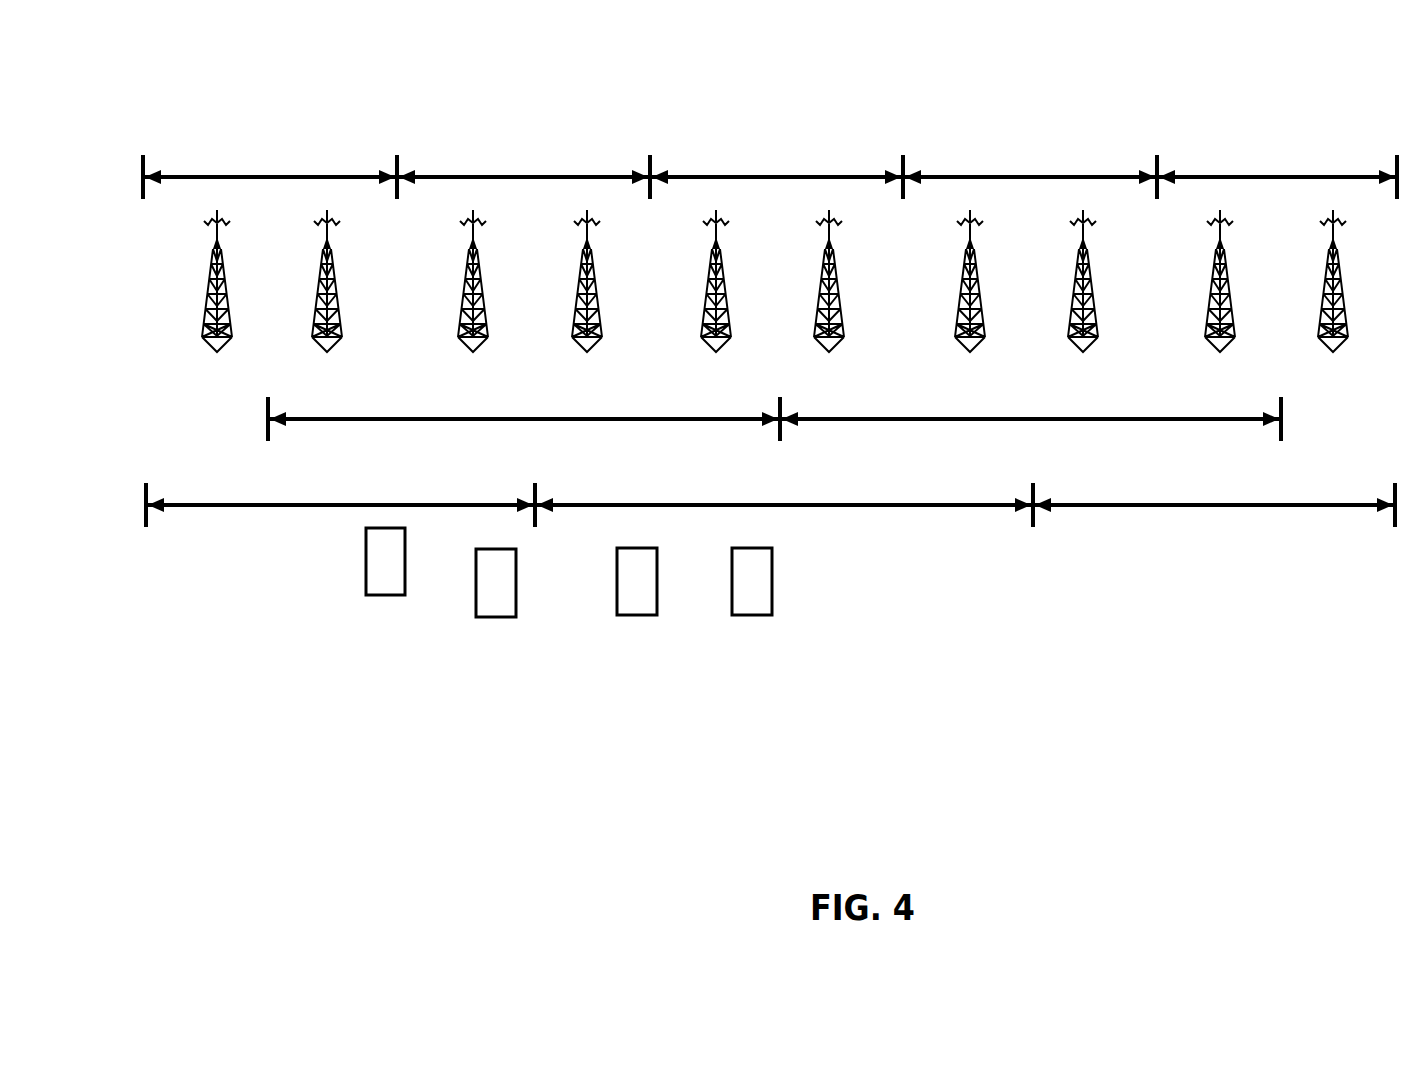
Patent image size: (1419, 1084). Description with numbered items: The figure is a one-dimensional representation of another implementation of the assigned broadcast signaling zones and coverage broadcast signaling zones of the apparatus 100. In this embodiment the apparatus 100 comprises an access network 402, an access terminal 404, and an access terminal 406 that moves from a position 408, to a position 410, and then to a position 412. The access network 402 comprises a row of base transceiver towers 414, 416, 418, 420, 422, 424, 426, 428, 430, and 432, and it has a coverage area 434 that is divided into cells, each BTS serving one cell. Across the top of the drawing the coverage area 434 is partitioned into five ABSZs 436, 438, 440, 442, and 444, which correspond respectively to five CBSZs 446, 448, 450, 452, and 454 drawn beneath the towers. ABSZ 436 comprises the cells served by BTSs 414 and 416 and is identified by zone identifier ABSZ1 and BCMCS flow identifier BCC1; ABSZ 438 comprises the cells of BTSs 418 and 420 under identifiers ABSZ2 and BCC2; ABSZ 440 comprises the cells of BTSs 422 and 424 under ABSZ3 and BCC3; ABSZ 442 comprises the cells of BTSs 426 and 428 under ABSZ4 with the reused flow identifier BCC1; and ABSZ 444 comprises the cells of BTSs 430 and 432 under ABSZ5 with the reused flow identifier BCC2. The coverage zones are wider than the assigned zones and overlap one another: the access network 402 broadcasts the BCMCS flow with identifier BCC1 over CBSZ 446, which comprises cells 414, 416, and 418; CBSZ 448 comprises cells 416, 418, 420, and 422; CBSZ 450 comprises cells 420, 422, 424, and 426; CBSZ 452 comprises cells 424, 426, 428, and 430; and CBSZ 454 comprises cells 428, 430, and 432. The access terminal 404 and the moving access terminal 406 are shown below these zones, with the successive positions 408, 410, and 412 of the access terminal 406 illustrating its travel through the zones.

The apparatus 100 is at (226, 828).
The access network 402 is at (190, 303).
The access terminal 404 is at (366, 565).
The access terminal 406 is at (653, 651).
The position 408 is at (497, 647).
The position 410 is at (643, 648).
The position 412 is at (750, 647).
The base transceiver tower 414 is at (217, 292).
The base transceiver tower 416 is at (327, 292).
The base transceiver tower 418 is at (473, 292).
The base transceiver tower 420 is at (587, 292).
The base transceiver tower 422 is at (716, 292).
The base transceiver tower 424 is at (829, 292).
The base transceiver tower 426 is at (970, 292).
The base transceiver tower 428 is at (1083, 292).
The base transceiver tower 430 is at (1220, 292).
The base transceiver tower 432 is at (1333, 292).
The coverage area 434 is at (205, 162).
The assigned broadcast signaling zone 436 is at (325, 172).
The assigned broadcast signaling zone 438 is at (582, 172).
The assigned broadcast signaling zone 440 is at (828, 172).
The assigned broadcast signaling zone 442 is at (1097, 172).
The assigned broadcast signaling zone 444 is at (1350, 172).
The coverage broadcast signaling zone 446 is at (447, 502).
The coverage broadcast signaling zone 448 is at (370, 415).
The coverage broadcast signaling zone 450 is at (608, 502).
The coverage broadcast signaling zone 452 is at (873, 415).
The coverage broadcast signaling zone 454 is at (1065, 502).